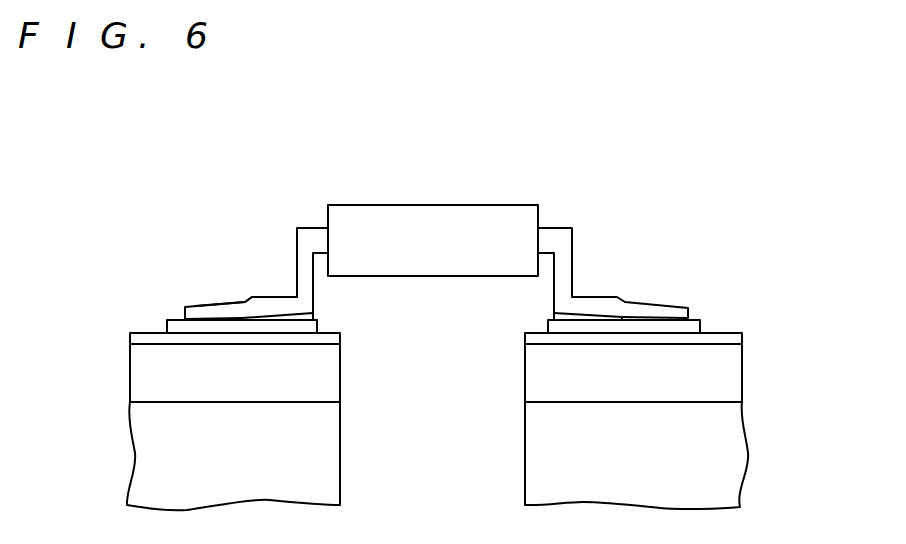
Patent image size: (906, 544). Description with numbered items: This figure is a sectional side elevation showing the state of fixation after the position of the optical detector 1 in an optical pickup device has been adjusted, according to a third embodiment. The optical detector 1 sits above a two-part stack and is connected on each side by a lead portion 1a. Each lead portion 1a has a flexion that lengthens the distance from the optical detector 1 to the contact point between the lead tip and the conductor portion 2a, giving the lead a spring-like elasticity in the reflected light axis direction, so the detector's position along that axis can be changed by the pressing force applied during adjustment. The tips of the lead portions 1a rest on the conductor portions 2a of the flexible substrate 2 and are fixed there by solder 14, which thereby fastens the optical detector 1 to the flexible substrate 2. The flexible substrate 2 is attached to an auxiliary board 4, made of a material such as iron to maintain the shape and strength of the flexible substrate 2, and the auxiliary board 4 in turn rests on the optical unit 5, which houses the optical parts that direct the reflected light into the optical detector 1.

The optical detector 1 is at (432, 217).
The lead portion 1a is at (558, 237).
The solder 14 is at (257, 292).
The conductor portion 2a is at (700, 322).
The flexible substrate 2 is at (728, 342).
The auxiliary board 4 is at (728, 380).
The optical unit 5 is at (728, 448).